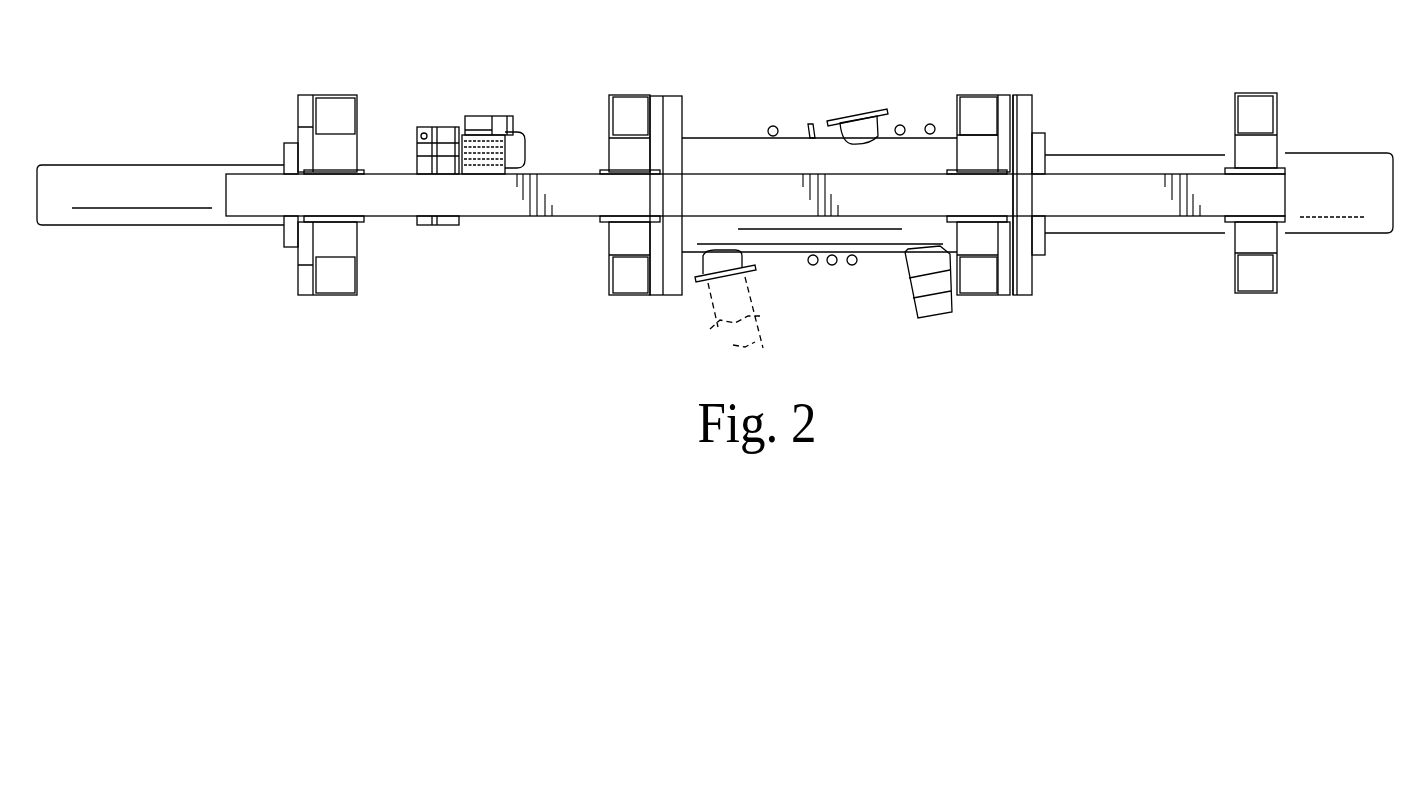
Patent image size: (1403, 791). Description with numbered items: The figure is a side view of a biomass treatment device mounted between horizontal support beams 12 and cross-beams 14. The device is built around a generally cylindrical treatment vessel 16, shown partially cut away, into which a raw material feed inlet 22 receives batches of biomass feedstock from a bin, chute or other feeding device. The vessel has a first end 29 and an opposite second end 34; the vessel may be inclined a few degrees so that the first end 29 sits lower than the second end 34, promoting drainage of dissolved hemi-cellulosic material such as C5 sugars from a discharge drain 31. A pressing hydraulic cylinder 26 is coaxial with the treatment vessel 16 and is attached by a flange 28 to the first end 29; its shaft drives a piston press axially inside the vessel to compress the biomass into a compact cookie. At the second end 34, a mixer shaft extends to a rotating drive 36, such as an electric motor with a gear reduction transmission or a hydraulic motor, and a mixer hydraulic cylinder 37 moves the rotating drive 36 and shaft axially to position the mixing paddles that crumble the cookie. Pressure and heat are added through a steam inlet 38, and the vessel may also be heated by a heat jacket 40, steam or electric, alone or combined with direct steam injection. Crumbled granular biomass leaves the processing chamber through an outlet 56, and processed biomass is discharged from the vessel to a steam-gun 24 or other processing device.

The horizontal support beams 12 is at (248, 196).
The cross-beams 14 is at (325, 280).
The treatment vessel 16 is at (727, 138).
The raw material feed inlet 22 is at (860, 118).
The steam-gun 24 is at (742, 345).
The pressing hydraulic cylinder 26 is at (1345, 183).
The flange 28 is at (1037, 135).
The first end 29 is at (1013, 295).
The discharge drain 31 is at (943, 318).
The second end 34 is at (693, 133).
The rotating drive 36 is at (432, 150).
The mixer hydraulic cylinder 37 is at (112, 180).
The steam inlet 38 is at (807, 127).
The heat jacket 40 is at (932, 124).
The outlet 56 is at (702, 265).